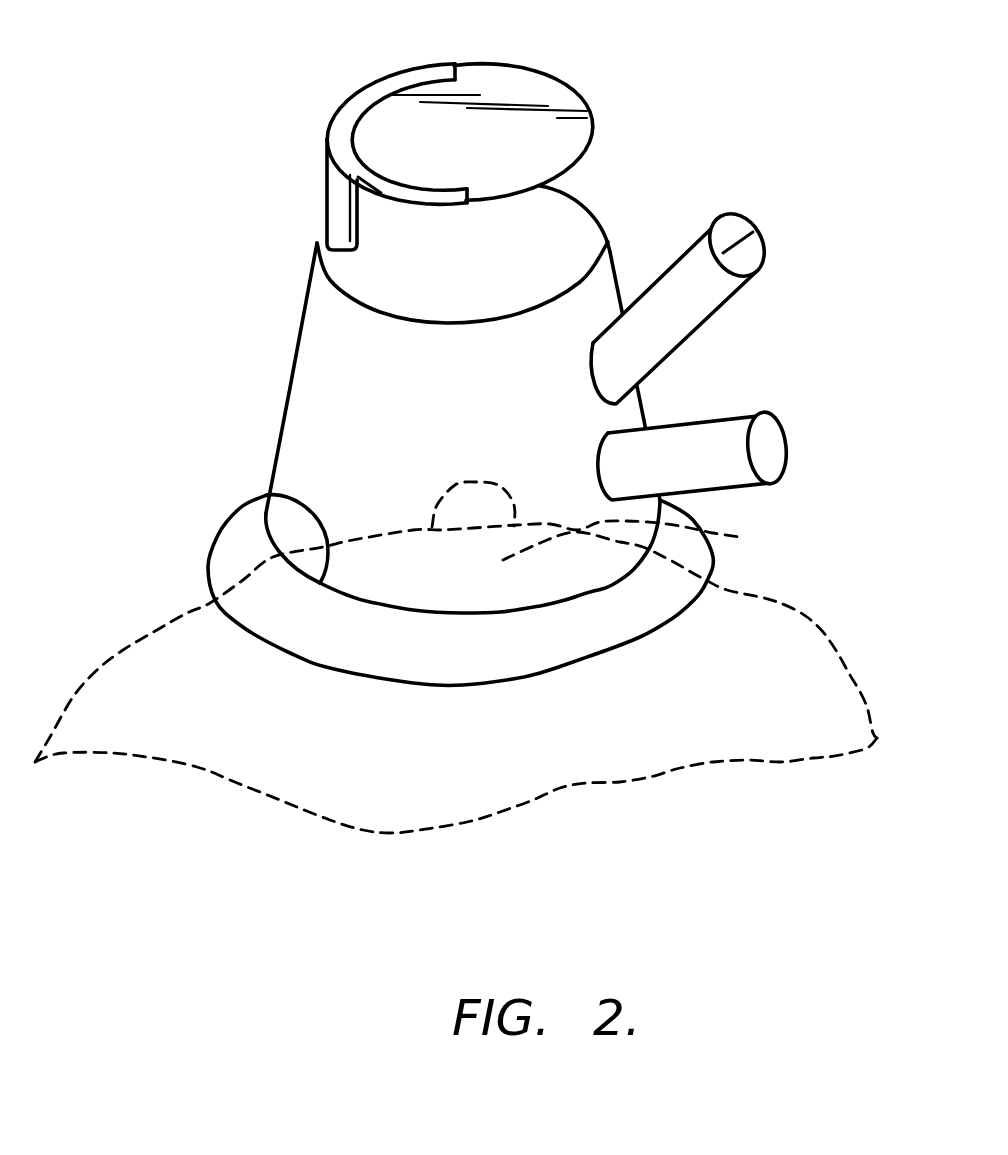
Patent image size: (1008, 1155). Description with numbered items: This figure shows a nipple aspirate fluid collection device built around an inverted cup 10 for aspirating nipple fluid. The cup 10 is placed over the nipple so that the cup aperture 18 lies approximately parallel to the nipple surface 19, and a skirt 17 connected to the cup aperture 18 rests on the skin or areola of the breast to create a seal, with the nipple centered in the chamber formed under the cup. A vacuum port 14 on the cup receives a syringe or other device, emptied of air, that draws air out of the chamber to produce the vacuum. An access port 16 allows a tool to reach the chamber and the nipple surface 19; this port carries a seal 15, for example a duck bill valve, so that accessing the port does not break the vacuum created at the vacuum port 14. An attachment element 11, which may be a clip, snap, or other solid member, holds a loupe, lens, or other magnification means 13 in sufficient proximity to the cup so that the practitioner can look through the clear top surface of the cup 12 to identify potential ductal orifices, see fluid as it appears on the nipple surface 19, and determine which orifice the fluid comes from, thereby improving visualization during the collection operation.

The cup 10 is at (240, 364).
The attachment element 11 is at (327, 193).
The top surface of the cup 12 is at (565, 223).
The magnification means 13 is at (412, 110).
The vacuum port 14 is at (713, 470).
The seal 15 is at (737, 225).
The access port 16 is at (682, 312).
The skirt 17 is at (223, 555).
The cup aperture 18 is at (267, 497).
The nipple surface 19 is at (740, 537).